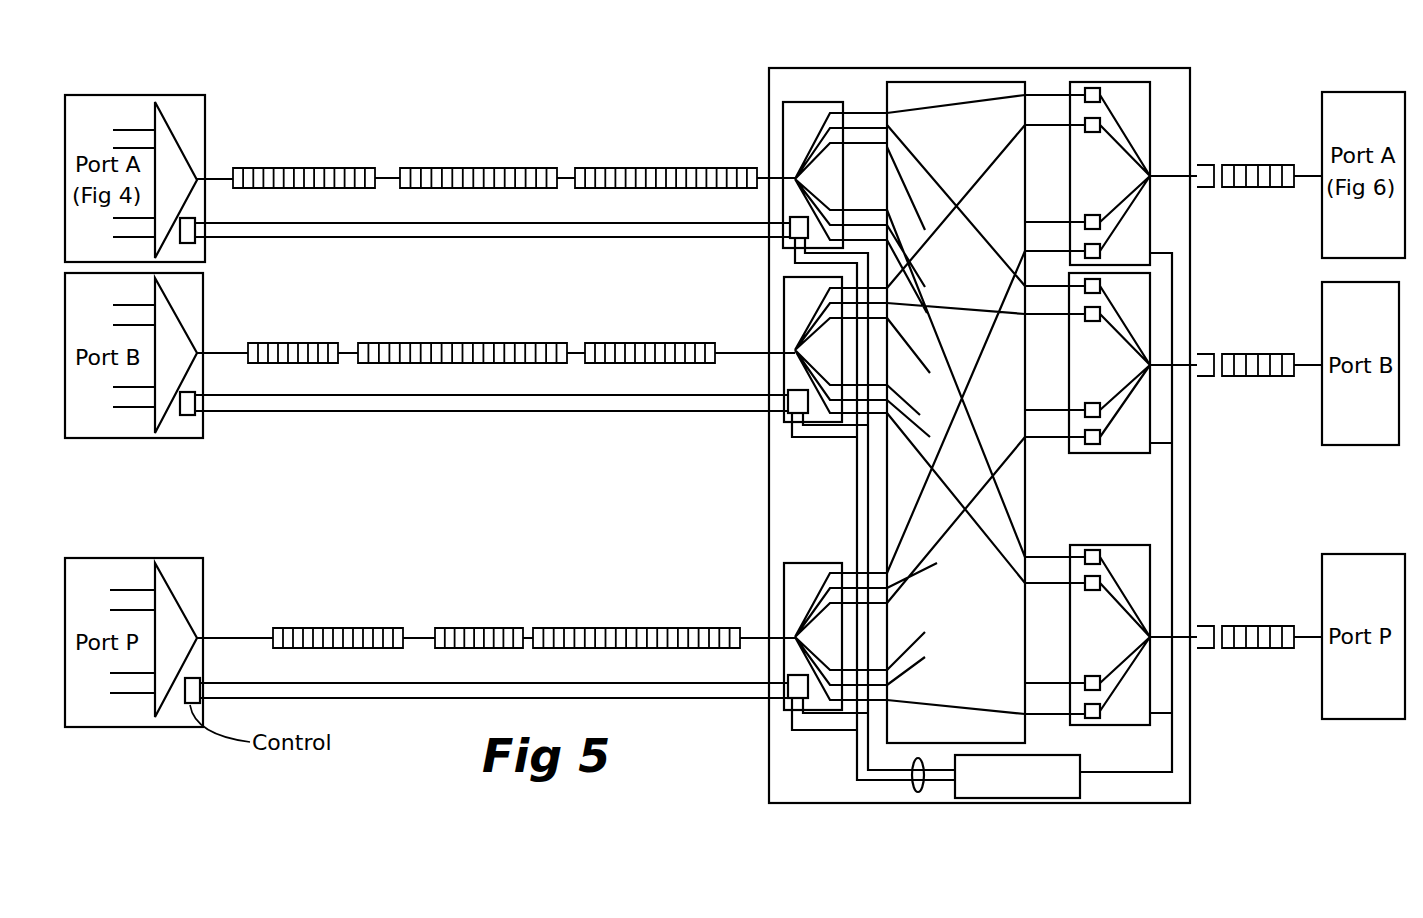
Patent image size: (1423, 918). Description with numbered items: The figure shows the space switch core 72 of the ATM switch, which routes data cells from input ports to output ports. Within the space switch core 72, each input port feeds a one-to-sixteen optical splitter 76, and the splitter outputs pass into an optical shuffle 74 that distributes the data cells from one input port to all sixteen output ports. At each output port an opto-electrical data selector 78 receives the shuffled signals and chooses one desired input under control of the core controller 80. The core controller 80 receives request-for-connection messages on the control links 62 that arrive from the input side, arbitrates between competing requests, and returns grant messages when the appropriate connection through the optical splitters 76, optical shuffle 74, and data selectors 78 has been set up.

The control link 62 is at (915, 792).
The space switch core 72 is at (1027, 68).
The optical shuffle 74 is at (950, 82).
The optical splitter 76 is at (783, 123).
The opto-electrical data selector 78 is at (1150, 107).
The core controller 80 is at (980, 797).